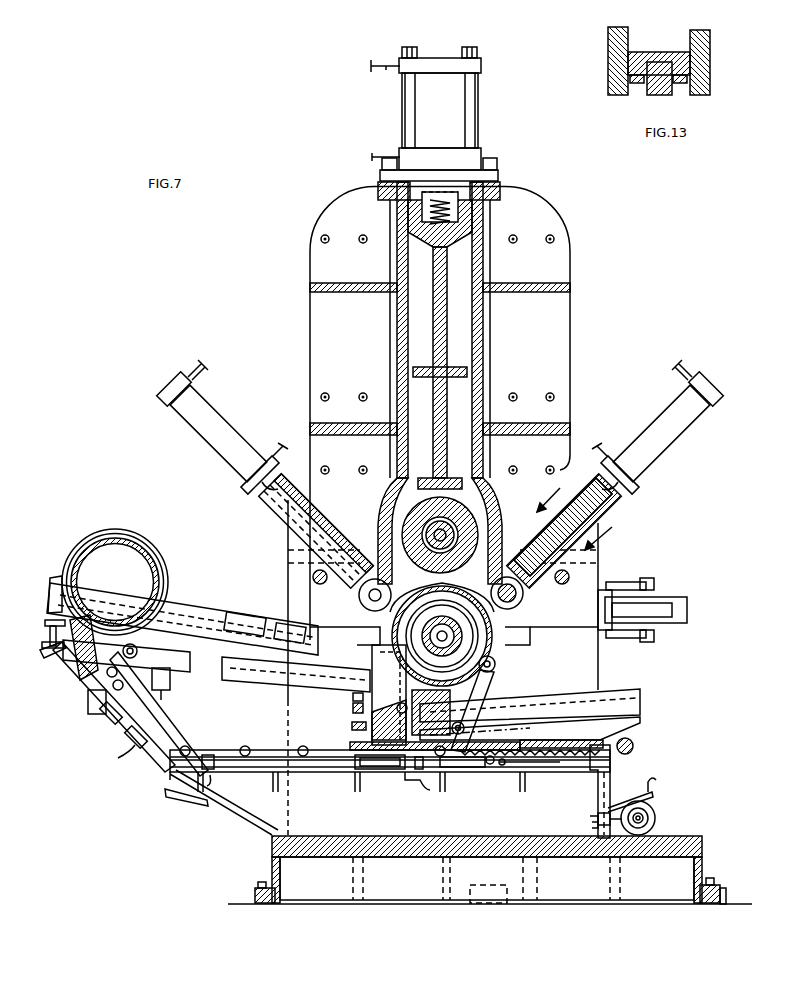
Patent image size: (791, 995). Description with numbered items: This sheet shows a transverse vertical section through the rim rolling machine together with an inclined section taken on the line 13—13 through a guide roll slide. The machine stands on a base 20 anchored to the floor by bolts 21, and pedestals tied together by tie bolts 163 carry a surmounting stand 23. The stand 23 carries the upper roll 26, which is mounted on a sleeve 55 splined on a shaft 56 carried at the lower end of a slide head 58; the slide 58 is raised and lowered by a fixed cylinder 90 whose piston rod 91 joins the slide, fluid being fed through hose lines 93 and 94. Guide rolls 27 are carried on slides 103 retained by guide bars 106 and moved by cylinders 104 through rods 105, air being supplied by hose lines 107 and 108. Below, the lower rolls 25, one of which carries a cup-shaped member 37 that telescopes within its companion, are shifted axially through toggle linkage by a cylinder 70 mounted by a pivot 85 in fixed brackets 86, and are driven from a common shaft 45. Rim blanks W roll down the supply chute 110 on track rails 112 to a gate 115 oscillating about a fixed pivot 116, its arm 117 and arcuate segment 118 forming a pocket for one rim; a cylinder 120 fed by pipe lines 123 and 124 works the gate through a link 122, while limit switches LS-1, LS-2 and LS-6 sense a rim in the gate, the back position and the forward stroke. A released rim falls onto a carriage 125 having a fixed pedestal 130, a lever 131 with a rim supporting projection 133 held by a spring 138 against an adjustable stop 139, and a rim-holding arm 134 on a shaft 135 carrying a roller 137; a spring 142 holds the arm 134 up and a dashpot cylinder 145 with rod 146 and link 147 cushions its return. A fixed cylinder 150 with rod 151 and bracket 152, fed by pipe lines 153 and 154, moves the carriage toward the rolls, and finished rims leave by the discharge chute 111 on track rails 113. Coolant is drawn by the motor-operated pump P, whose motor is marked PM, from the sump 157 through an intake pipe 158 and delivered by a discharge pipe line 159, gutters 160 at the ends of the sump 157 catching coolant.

In FIG. 7, the fixed cylinder 90 is at (446, 115).
In FIG. 7, the flexible hose line 93 is at (396, 70).
In FIG. 7, the flexible hose line 94 is at (398, 160).
In FIG. 7, the piston rod 91 is at (478, 205).
In FIG. 7, the slide head 58 is at (448, 272).
In FIG. 7, the stand 23 is at (560, 336).
In FIG. 13, the stand 23 is at (710, 58).
In FIG. 7, the cylinder 104 is at (230, 464).
In FIG. 7, the flexible hose line 107 is at (190, 382).
In FIG. 7, the flexible hose line 108 is at (268, 452).
In FIG. 7, the slide 103 is at (282, 514).
In FIG. 13, the slide 103 is at (655, 95).
In FIG. 7, the rod 105 is at (258, 490).
In FIG. 7, the section line 13— 13 is at (567, 520).
In FIG. 7, the tie bolts 163 is at (320, 584).
In FIG. 7, the upper roll 26 is at (428, 556).
In FIG. 7, the shaft 56 is at (462, 545).
In FIG. 7, the sleeve 55 is at (455, 560).
In FIG. 7, the guide rolls 27 is at (376, 608).
In FIG. 7, the workpiece W is at (447, 600).
In FIG. 7, the lower rolls 25 is at (485, 630).
In FIG. 7, the cup-shaped member 37 is at (424, 602).
In FIG. 7, the roller 137 is at (496, 662).
In FIG. 7, the movable rim-holding arm 134 is at (490, 692).
In FIG. 7, the fixed rim-holding pedestal 130 is at (372, 657).
In FIG. 7, the rim supporting projection 133 is at (400, 700).
In FIG. 7, the spring 138 is at (356, 698).
In FIG. 7, the lever 131 is at (356, 710).
In FIG. 7, the adjustable stop 139 is at (355, 727).
In FIG. 7, the carriage 125 is at (356, 746).
In FIG. 7, the shaft 135 is at (468, 731).
In FIG. 7, the gravity discharge chute 111 is at (640, 694).
In FIG. 7, the track rails 113 is at (632, 721).
In FIG. 7, the common shaft 45 is at (634, 746).
In FIG. 7, the cylinder 70 is at (665, 604).
In FIG. 7, the fixed brackets 86 is at (620, 590).
In FIG. 7, the pivot 85 is at (648, 584).
In FIG. 7, the fixed cylinder 150 is at (313, 772).
In FIG. 7, the pipe line 153 is at (210, 779).
In FIG. 7, the cylinder 145 is at (384, 770).
In FIG. 7, the pipe line 154 is at (420, 770).
In FIG. 7, the rod 146 is at (432, 790).
In FIG. 7, the link 147 is at (486, 768).
In FIG. 7, the spring 142 is at (510, 772).
In FIG. 7, the rod 151 is at (545, 768).
In FIG. 7, the bracket 152 is at (592, 770).
In FIG. 7, the sump 157 is at (484, 824).
In FIG. 7, the gutters 160 is at (193, 804).
In FIG. 7, the discharge pipe line 159 is at (656, 782).
In FIG. 7, the pump motor PM is at (656, 826).
In FIG. 7, the pump P is at (648, 817).
In FIG. 7, the intake pipe 158 is at (592, 825).
In FIG. 7, the base 20 is at (703, 858).
In FIG. 7, the bolts 21 is at (718, 883).
In FIG. 7, the arm 117 is at (176, 619).
In FIG. 7, the gravity feed chute 110 is at (52, 600).
In FIG. 7, the track rails 112 is at (50, 623).
In FIG. 7, the arcuate segment 118 is at (45, 648).
In FIG. 7, the gate 115 is at (76, 660).
In FIG. 7, the fixed pivot 116 is at (130, 708).
In FIG. 7, the limit switch LS-1 is at (118, 650).
In FIG. 7, the link 122 is at (106, 675).
In FIG. 7, the limit switch LS-6 is at (171, 680).
In FIG. 7, the limit switch LS-2 is at (88, 702).
In FIG. 7, the pipe line 124 is at (106, 718).
In FIG. 7, the cylinder 120 is at (128, 732).
In FIG. 7, the pipe line 123 is at (118, 758).
In FIG. 13, the guide bars 106 is at (638, 84).